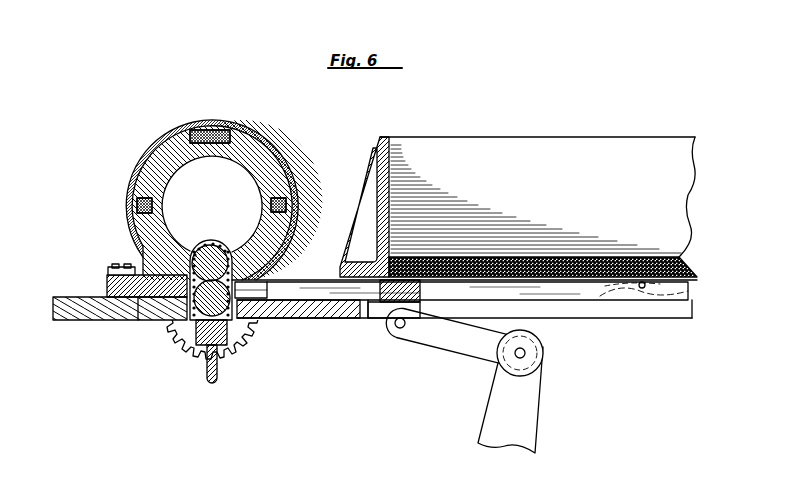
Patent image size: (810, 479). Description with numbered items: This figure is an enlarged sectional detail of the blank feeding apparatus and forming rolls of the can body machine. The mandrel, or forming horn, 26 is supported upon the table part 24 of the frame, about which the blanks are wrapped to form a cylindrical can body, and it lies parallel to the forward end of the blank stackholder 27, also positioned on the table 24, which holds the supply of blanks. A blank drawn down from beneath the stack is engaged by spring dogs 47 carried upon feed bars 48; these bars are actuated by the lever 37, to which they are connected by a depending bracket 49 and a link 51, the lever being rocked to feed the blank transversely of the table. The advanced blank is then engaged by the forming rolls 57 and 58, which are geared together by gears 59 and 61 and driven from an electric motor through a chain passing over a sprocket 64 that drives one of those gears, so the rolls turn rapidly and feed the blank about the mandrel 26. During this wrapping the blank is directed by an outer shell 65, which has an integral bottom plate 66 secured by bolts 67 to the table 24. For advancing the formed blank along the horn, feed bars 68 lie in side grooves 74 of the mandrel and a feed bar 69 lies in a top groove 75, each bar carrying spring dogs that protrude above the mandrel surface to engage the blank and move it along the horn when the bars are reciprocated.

The table part 24 is at (63, 301).
The mandrel 26 is at (290, 170).
The blank stackholder 27 is at (522, 144).
The lever 37 is at (521, 425).
The spring dogs 47 is at (613, 279).
The feed bars 48 is at (690, 290).
The depending bracket 49 is at (385, 303).
The link 51 is at (456, 343).
The forming roll 57 is at (205, 308).
The forming roll 58 is at (212, 243).
The gear 59 is at (268, 281).
The gear 61 is at (232, 256).
The sprocket 64 is at (246, 346).
The outer shell 65 is at (187, 122).
The bottom plate 66 is at (132, 288).
The bolts 67 is at (120, 266).
The feed bars 68 is at (136, 200).
The feed bar 69 is at (233, 128).
The side grooves 74 is at (271, 203).
The top groove 75 is at (212, 143).